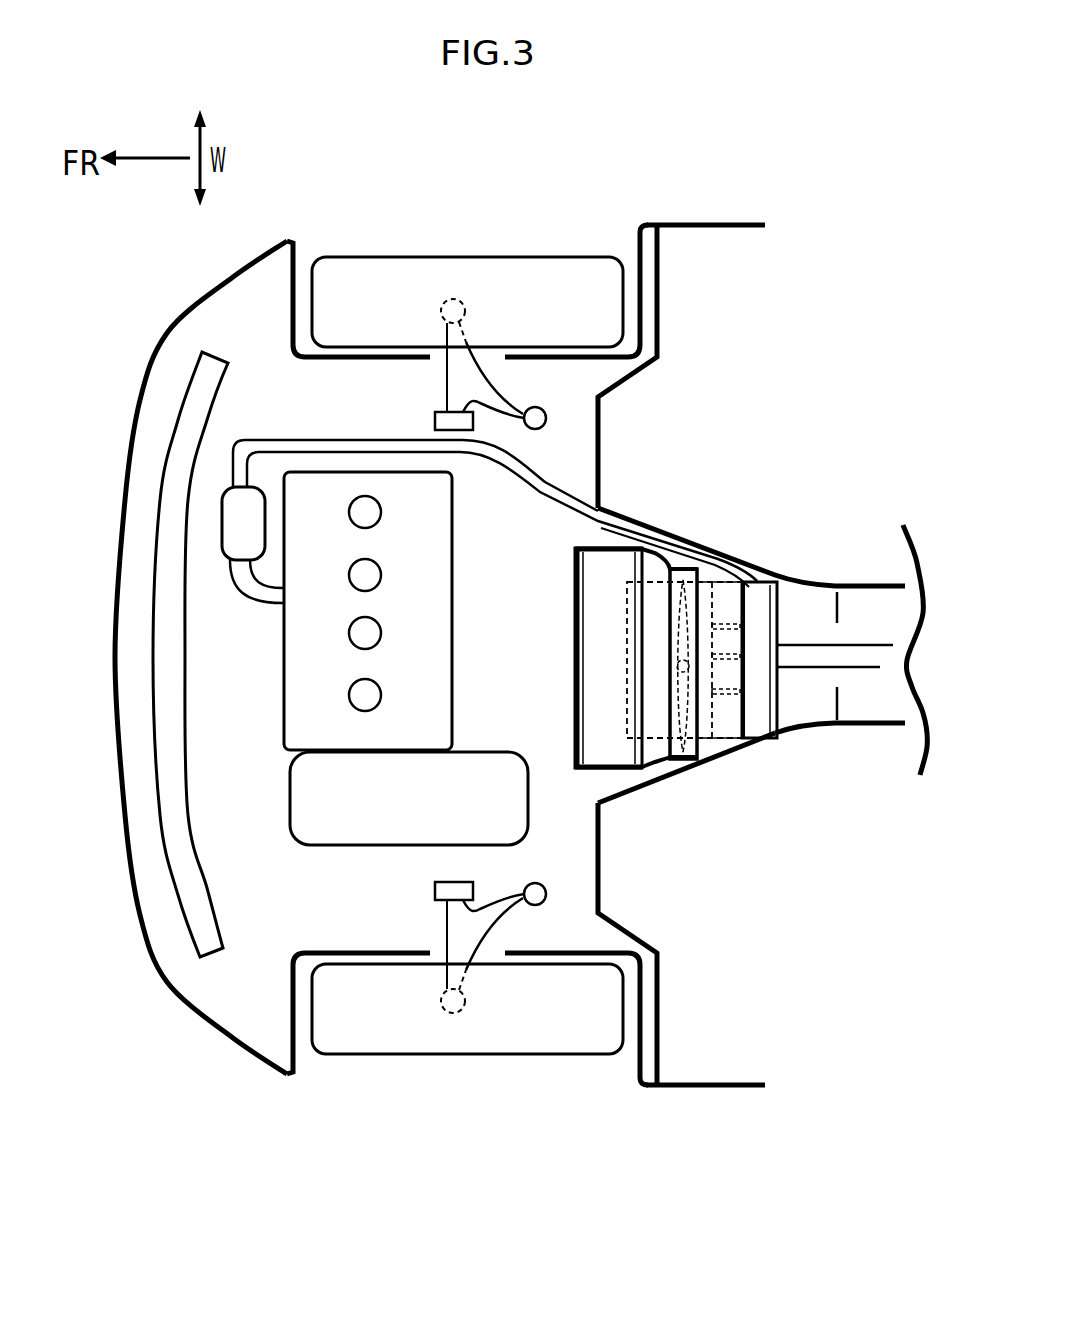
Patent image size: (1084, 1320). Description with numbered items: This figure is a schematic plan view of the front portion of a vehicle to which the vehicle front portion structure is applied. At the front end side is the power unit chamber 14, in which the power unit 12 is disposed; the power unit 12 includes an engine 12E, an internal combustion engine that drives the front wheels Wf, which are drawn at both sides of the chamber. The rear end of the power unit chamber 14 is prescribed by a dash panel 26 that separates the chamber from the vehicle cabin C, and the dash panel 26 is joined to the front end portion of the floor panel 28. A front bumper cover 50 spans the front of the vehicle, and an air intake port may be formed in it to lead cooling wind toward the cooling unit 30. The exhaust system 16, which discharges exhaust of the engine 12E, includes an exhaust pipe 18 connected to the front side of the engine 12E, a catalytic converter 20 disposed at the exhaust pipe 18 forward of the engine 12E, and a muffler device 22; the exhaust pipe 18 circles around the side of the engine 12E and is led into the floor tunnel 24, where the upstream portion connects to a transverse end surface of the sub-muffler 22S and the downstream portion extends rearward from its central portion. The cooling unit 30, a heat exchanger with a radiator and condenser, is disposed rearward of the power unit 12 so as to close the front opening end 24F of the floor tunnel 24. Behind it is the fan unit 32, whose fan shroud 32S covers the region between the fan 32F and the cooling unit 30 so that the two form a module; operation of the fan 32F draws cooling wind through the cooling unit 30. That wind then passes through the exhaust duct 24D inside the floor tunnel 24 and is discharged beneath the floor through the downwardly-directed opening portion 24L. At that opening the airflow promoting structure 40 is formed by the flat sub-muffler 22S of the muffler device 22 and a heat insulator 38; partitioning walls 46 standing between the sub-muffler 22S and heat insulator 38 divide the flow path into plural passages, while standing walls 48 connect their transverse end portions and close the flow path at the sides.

The power unit 12 is at (383, 664).
The engine 12E is at (438, 630).
The power unit chamber 14 is at (343, 921).
The exhaust system 16 is at (346, 428).
The exhaust pipe 18 is at (883, 650).
The catalytic converter 20 is at (227, 530).
The muffler device 22 is at (798, 600).
The sub-muffler 22S is at (770, 566).
The floor tunnel 24 is at (820, 734).
The exhaust duct 24D is at (891, 708).
The opening end 24F is at (598, 798).
The downwardly-directed opening portion 24L is at (893, 712).
The dash panel 26 is at (593, 864).
The floor panel 28 is at (710, 1057).
The cooling unit 30 is at (602, 560).
The fan unit 32 is at (733, 638).
The fan shroud 32S is at (666, 553).
The fan 32F is at (733, 673).
The heat insulator 38 is at (723, 727).
The airflow promoting structure 40 is at (701, 770).
The partitioning walls 46 is at (742, 660).
The standing walls 48 is at (748, 737).
The front bumper cover 50 is at (127, 848).
The front wheels Wf is at (418, 272).
The vehicle cabin C is at (820, 951).